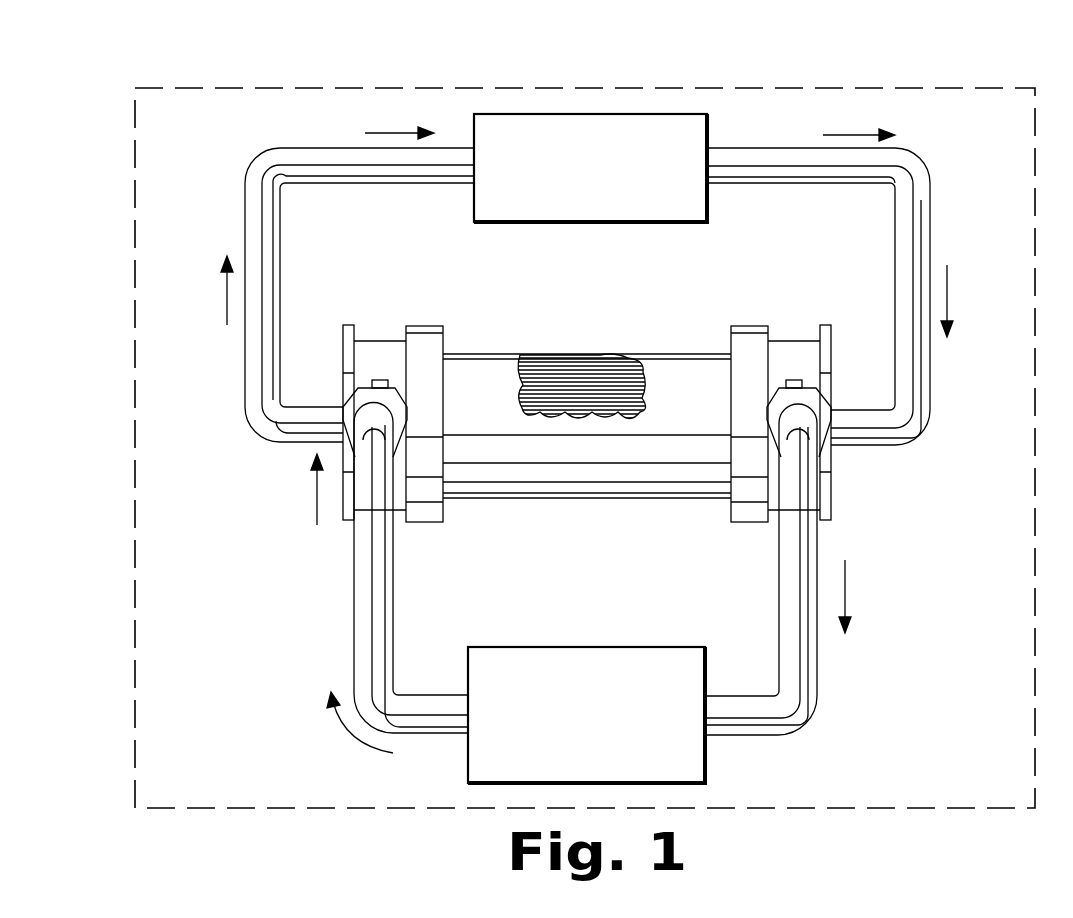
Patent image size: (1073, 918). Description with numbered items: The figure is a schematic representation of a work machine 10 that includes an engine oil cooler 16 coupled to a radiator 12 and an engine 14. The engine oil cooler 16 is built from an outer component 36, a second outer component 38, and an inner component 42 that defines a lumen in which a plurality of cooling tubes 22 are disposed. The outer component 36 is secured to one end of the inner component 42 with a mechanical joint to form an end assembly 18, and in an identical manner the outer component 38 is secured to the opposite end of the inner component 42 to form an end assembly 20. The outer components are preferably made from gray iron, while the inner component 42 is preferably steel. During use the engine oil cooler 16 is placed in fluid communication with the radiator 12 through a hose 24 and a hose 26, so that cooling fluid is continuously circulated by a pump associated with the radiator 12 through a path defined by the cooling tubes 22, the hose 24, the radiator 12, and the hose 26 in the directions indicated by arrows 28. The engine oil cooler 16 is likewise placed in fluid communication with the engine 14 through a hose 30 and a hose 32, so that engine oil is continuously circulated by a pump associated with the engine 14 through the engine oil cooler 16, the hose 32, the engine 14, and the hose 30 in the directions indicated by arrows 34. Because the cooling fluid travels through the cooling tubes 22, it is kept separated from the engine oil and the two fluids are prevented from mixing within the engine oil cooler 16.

The work machine 10 is at (1022, 88).
The radiator 12 is at (708, 118).
The engine 14 is at (665, 652).
The engine oil cooler 16 is at (700, 323).
The end assembly 18 is at (810, 374).
The end assembly 20 is at (363, 370).
The cooling tubes 22 is at (566, 368).
The hose 24 is at (258, 164).
The hose 26 is at (920, 162).
The arrows 28 is at (398, 133).
The hose 30 is at (355, 625).
The hose 32 is at (808, 672).
The arrows 34 is at (317, 497).
The outer component 36 is at (782, 350).
The outer component 38 is at (390, 350).
The inner component 42 is at (486, 367).